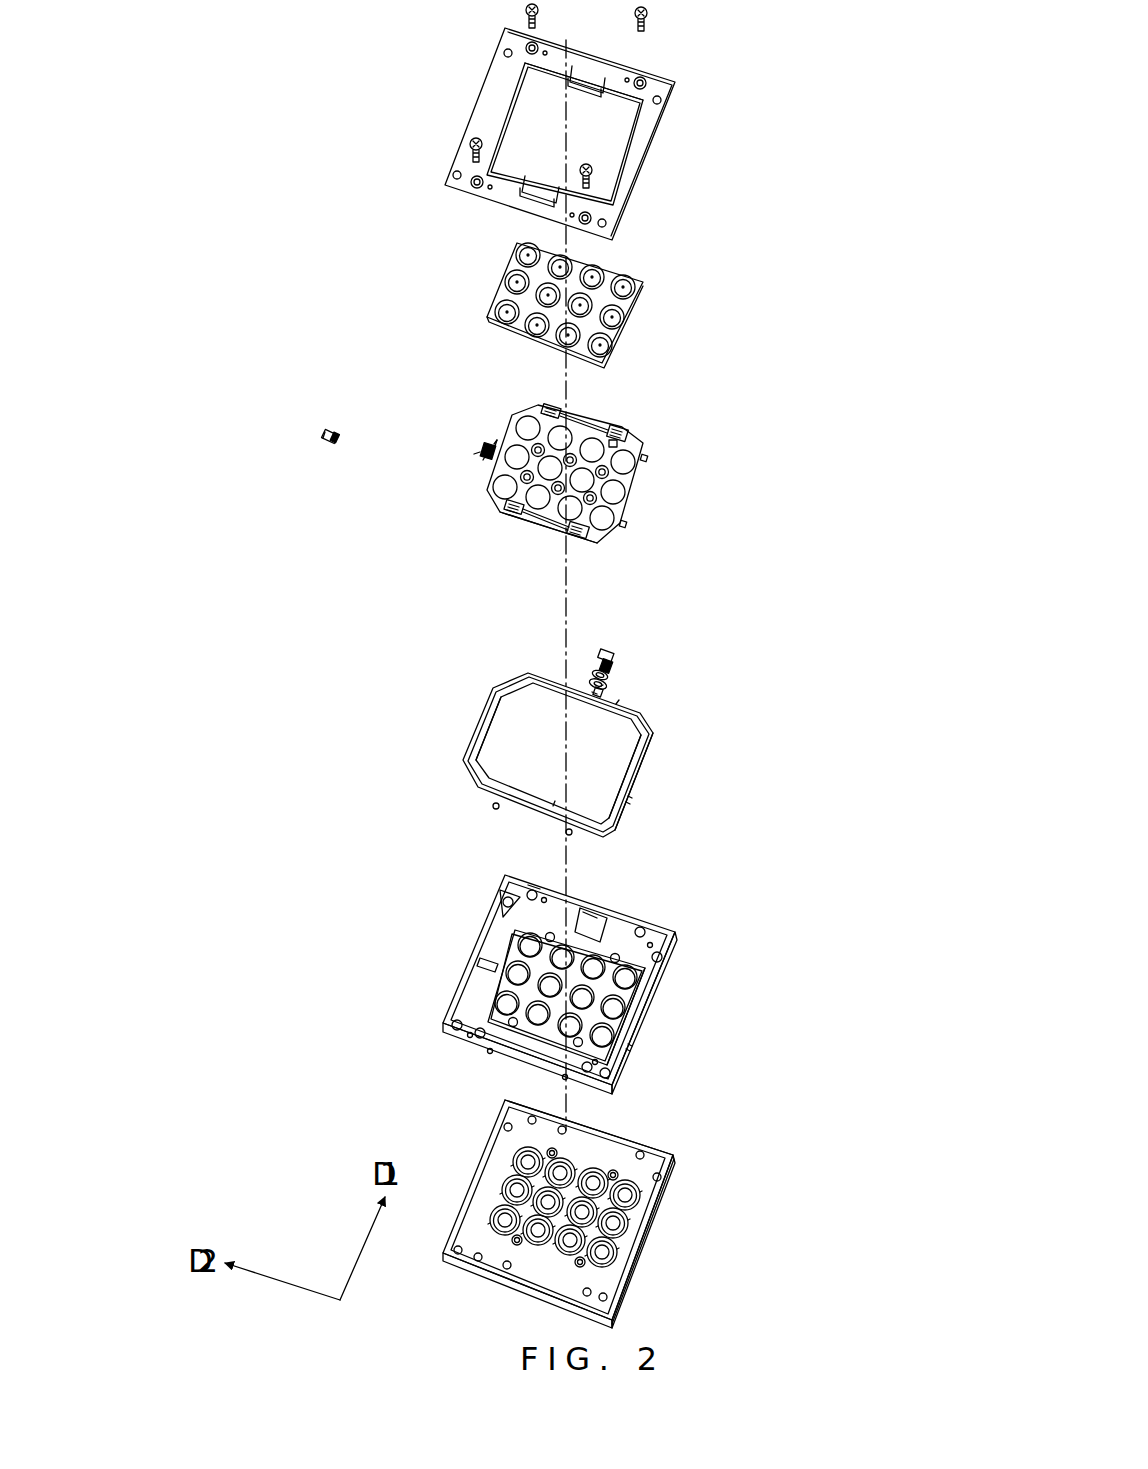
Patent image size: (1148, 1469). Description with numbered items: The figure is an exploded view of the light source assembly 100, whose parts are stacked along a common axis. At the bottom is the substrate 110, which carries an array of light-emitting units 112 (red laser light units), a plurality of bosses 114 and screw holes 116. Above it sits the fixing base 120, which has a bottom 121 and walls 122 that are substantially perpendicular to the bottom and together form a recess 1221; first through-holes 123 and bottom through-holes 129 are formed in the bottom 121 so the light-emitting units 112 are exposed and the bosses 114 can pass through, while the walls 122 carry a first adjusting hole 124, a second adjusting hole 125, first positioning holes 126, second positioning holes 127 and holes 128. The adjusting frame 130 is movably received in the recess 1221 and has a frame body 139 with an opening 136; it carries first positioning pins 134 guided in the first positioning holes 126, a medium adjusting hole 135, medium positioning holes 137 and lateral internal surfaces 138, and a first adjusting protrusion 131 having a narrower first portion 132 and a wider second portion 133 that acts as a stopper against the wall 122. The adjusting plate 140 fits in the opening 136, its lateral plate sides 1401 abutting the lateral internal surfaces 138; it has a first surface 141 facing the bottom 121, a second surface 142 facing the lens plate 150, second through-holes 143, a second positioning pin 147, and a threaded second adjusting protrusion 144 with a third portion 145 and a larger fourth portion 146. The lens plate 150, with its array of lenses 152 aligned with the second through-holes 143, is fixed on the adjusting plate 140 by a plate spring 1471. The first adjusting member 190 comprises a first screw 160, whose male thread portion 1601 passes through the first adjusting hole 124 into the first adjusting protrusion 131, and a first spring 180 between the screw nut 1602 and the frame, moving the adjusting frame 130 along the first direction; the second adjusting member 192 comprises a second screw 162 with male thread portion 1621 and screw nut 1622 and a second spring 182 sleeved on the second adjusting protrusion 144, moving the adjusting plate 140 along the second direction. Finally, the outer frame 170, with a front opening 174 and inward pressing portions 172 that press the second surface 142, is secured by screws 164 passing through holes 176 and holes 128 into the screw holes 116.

The light source assembly 100 is at (845, 1328).
The substrate 110 is at (643, 1208).
The light-emitting units 112 is at (620, 1230).
The bosses 114 is at (618, 1172).
The screw holes 116 is at (644, 1152).
The fixing base 120 is at (398, 947).
The bottom 121 is at (627, 995).
The wall 122 is at (487, 957).
The recess 1221 is at (500, 920).
The first through-holes 123 is at (621, 978).
The first adjusting hole 124 is at (603, 940).
The second adjusting hole 125 is at (485, 975).
The first positioning hole 126 is at (490, 1054).
The second positioning hole 127 is at (631, 1051).
The holes 128 is at (533, 885).
The bottom through-holes 129 is at (618, 956).
The adjusting frame 130 is at (420, 742).
The first adjusting protrusion 131 is at (727, 663).
The first portion 132 is at (603, 684).
The second portion 133 is at (595, 690).
The first positioning pin 134 is at (492, 806).
The medium adjusting hole 135 is at (490, 729).
The opening 136 is at (608, 768).
The medium positioning hole 137 is at (634, 805).
The lateral internal surface 138 is at (618, 710).
The frame body 139 is at (655, 745).
The adjusting plate 140 is at (462, 477).
The lateral plate side 1401 is at (585, 415).
The first surface 141 is at (604, 545).
The second surface 142 is at (638, 452).
The second through-holes 143 is at (614, 489).
The second adjusting protrusion 144 is at (391, 368).
The third portion 145 is at (483, 448).
The fourth portion 146 is at (497, 440).
The second positioning pin 147 is at (626, 526).
The plate spring 1471 is at (616, 428).
The lens plate 150 is at (460, 285).
The lenses 152 is at (523, 252).
The first screw 160 is at (727, 556).
The male thread portion 1601 is at (612, 665).
The screw nut 1602 is at (610, 655).
The second screw 162 is at (276, 465).
The male thread portion 1621 is at (336, 442).
The screw nut 1622 is at (325, 437).
The screws 164 is at (525, 10).
The outer frame 170 is at (657, 88).
The pressing portion 172 is at (591, 90).
The front opening 174 is at (612, 147).
The holes 176 is at (643, 82).
The first spring 180 is at (610, 680).
The second spring 182 is at (483, 460).
The first adjusting member 190 is at (787, 578).
The second adjusting member 192 is at (216, 483).